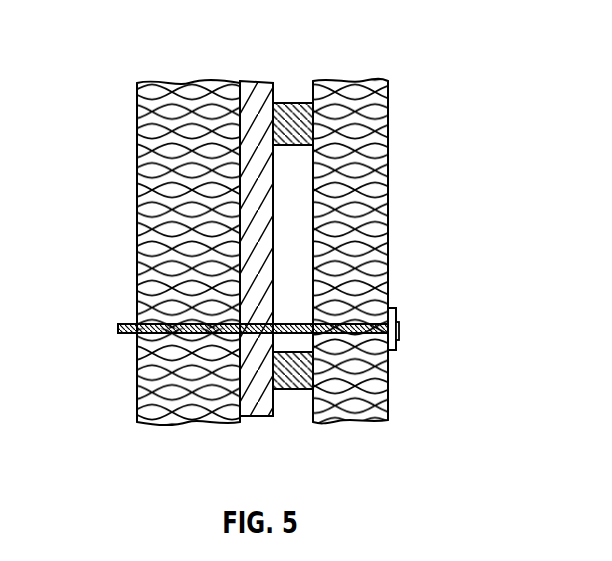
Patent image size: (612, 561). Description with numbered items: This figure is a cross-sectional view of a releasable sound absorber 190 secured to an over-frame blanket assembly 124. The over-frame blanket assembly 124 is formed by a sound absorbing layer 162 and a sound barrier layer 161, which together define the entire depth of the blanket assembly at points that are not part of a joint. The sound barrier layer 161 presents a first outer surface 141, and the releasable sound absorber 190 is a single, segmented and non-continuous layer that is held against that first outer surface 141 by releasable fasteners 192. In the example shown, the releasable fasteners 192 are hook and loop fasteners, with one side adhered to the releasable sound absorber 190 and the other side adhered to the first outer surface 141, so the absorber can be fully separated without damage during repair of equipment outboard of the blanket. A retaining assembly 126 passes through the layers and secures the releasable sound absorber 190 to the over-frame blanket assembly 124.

The over-frame blanket assembly 124 is at (137, 72).
The sound absorbing layer 162 is at (133, 209).
The sound barrier layer 161 is at (258, 412).
The first outer surface 141 is at (281, 187).
The releasable sound absorber 190 is at (394, 239).
The releasable fasteners 192 is at (300, 394).
The retaining assembly 126 is at (403, 343).